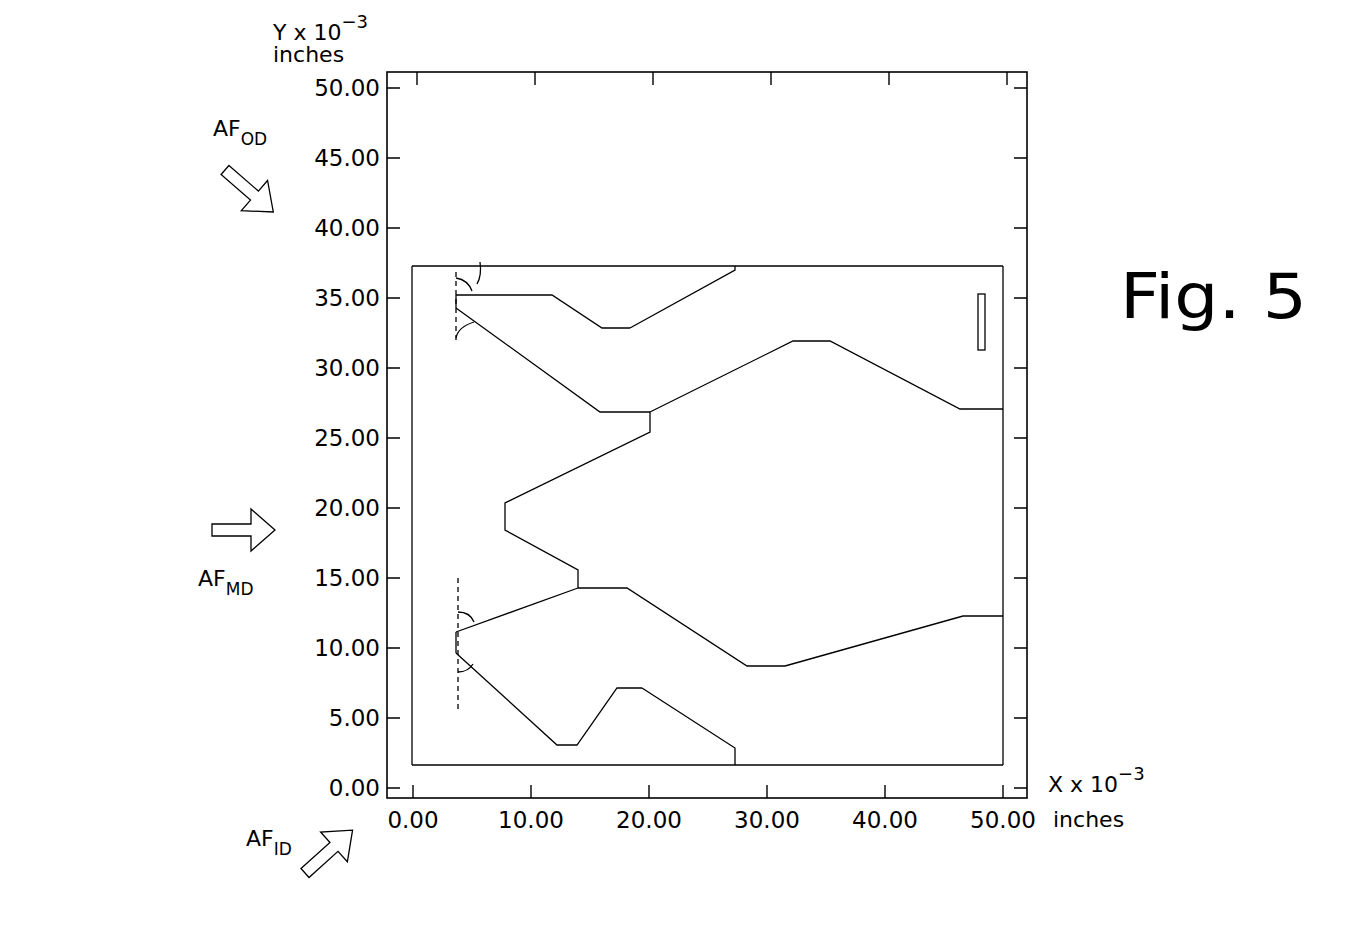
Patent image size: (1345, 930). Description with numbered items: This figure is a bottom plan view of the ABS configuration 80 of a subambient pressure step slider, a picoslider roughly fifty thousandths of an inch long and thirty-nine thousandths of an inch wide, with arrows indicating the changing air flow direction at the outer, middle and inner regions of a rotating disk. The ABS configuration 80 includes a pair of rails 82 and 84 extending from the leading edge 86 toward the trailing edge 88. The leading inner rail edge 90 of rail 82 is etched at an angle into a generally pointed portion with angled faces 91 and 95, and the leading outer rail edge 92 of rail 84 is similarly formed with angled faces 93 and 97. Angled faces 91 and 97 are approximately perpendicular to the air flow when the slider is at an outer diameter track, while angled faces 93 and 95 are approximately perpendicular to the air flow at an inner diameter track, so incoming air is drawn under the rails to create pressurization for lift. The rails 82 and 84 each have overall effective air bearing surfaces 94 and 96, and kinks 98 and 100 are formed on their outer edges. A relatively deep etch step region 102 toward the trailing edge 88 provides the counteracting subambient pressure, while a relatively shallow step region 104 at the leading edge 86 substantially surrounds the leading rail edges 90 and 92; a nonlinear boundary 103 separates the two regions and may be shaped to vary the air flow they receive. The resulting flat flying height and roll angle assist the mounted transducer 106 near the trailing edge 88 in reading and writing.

The ABS configuration 80 is at (613, 196).
The rail 82 is at (853, 645).
The rail 84 is at (848, 266).
The leading edge 86 is at (413, 415).
The trailing edge 88 is at (1003, 470).
The leading inner rail edge 90 is at (459, 643).
The angled face 91 is at (515, 608).
The leading outer rail edge 92 is at (458, 301).
The angled face 93 is at (548, 372).
The effective air bearing surface 94 is at (668, 632).
The angled face 95 is at (516, 706).
The effective air bearing surface 96 is at (718, 364).
The angled face 97 is at (526, 293).
The kink 98 is at (682, 724).
The kink 100 is at (652, 288).
The deep etch step region 102 is at (808, 523).
The nonlinear boundary 103 is at (507, 515).
The shallow step region 104 is at (483, 491).
The transducer 106 is at (978, 312).